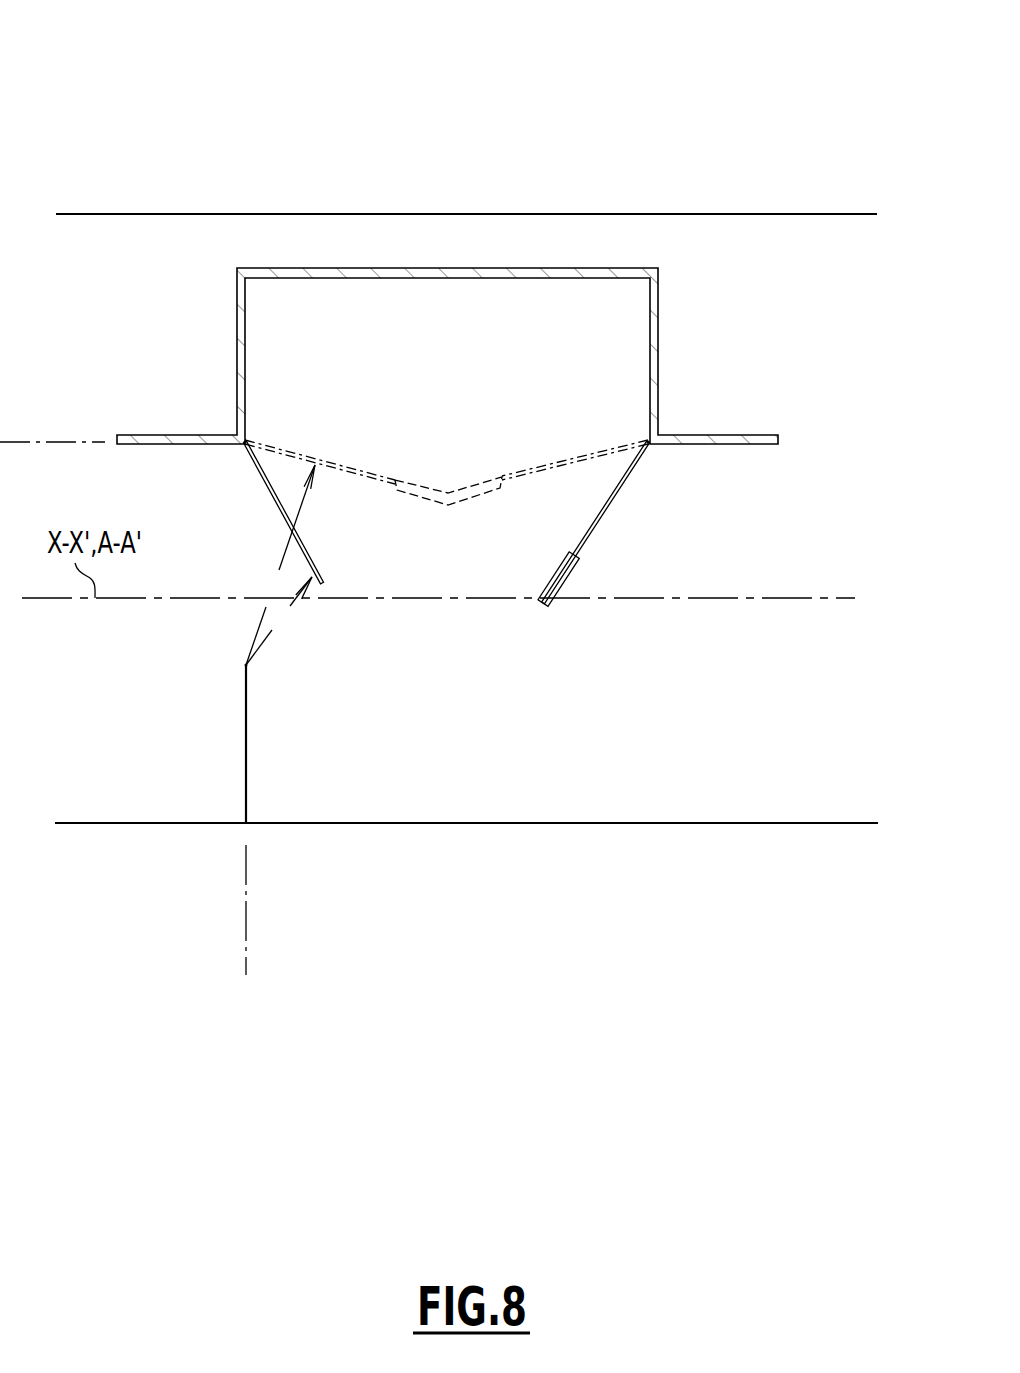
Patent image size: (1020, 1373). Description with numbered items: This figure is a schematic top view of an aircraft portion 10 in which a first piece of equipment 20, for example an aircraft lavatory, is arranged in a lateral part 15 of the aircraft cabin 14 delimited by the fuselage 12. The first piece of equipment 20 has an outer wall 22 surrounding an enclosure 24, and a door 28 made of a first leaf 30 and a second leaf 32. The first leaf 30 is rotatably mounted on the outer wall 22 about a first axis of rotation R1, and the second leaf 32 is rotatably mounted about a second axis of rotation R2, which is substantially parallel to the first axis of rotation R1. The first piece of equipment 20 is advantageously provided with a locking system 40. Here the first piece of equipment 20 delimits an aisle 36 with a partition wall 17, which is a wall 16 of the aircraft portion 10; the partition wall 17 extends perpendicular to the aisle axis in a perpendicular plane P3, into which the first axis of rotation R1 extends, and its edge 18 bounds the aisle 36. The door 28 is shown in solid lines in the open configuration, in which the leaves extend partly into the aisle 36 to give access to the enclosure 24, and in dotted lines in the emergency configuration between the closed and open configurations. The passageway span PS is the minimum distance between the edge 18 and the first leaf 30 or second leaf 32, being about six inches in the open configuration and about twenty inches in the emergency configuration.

The aircraft portion 10 is at (680, 60).
The fuselage 12 is at (318, 213).
The aircraft cabin 14 is at (811, 230).
The lateral part 15 is at (753, 268).
The wall 16 is at (276, 708).
The partition wall 17 is at (248, 770).
The edge 18 is at (246, 665).
The first piece of equipment 20 is at (603, 246).
The outer wall 22 is at (655, 385).
The enclosure 24 is at (630, 312).
The door 28 is at (656, 492).
The first leaf 30 is at (357, 474).
The second leaf 32 is at (549, 470).
The aisle 36 is at (530, 694).
The locking system 40 is at (421, 455).
The first axis of rotation R1 is at (245, 446).
The second axis of rotation R2 is at (652, 446).
The passageway span PS is at (280, 565).
The perpendicular plane P3 is at (246, 887).